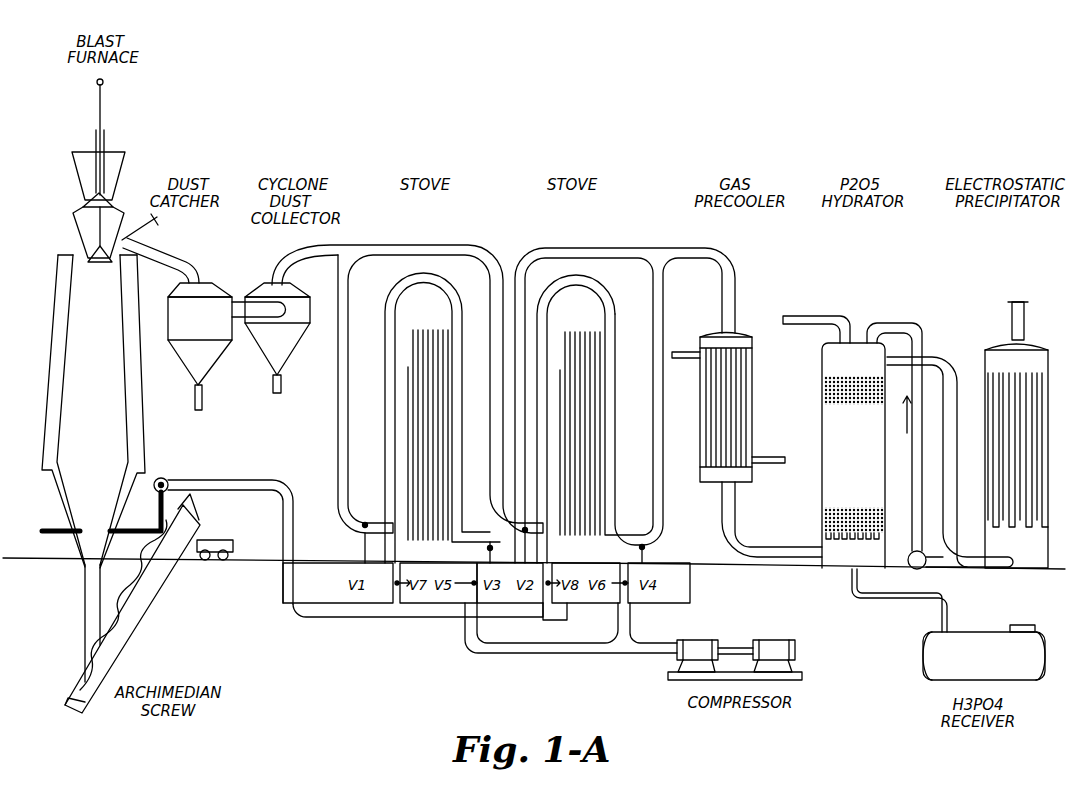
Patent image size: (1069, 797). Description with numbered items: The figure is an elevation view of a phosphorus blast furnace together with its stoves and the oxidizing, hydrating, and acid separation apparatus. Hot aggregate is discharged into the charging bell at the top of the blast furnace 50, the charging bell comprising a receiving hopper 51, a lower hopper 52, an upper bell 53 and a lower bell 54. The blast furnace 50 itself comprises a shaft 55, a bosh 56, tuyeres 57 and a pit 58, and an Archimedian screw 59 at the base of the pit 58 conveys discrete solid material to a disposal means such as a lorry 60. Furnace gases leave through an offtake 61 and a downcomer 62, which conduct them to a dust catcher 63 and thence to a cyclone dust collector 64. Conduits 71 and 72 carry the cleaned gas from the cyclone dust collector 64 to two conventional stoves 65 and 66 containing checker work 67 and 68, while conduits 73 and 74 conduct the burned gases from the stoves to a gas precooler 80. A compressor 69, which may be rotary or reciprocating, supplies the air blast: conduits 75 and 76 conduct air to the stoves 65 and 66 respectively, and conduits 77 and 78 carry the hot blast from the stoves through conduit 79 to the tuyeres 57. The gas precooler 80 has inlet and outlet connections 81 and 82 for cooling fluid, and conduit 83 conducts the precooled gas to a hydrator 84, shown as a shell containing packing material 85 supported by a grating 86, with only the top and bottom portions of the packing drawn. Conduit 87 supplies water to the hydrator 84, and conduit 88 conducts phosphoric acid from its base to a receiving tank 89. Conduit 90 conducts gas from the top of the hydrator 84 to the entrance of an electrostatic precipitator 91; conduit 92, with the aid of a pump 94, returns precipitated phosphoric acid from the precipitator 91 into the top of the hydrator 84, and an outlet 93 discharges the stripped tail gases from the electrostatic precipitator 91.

The blast furnace 50 is at (46, 350).
The receiving hopper 51 is at (75, 175).
The lower hopper 52 is at (78, 222).
The upper bell 53 is at (88, 200).
The lower bell 54 is at (85, 260).
The shaft 55 is at (52, 407).
The bosh 56 is at (72, 485).
The tuyeres 57 is at (90, 527).
The pit 58 is at (90, 598).
The Archimedian screw 59 is at (72, 697).
The lorry 60 is at (210, 540).
The offtake 61 is at (160, 222).
The downcomer 62 is at (193, 266).
The dust catcher 63 is at (203, 384).
The cyclone dust collector 64 is at (268, 360).
The stove 65 is at (397, 343).
The stove 66 is at (600, 318).
The checker work 67 is at (430, 385).
The checker work 68 is at (585, 387).
The compressor 69 is at (700, 640).
The conduit 71 is at (346, 272).
The conduit 72 is at (412, 250).
The conduit 73 is at (610, 250).
The conduit 74 is at (655, 286).
The conduit 75 is at (562, 643).
The conduit 76 is at (645, 645).
The conduit 77 is at (392, 604).
The conduit 78 is at (543, 604).
The conduit 79 is at (294, 528).
The gas precooler 80 is at (742, 346).
The inlet connection 81 is at (693, 339).
The outlet connection 82 is at (783, 445).
The conduit 83 is at (738, 502).
The hydrator 84 is at (821, 494).
The packing material 85 is at (821, 518).
The grating 86 is at (821, 537).
The conduit 87 is at (822, 316).
The conduit 88 is at (888, 600).
The receiving tank 89 is at (923, 655).
The conduit 90 is at (978, 360).
The electrostatic precipitator 91 is at (995, 343).
The conduit 92 is at (916, 300).
The outlet 93 is at (1012, 306).
The pump 94 is at (943, 530).